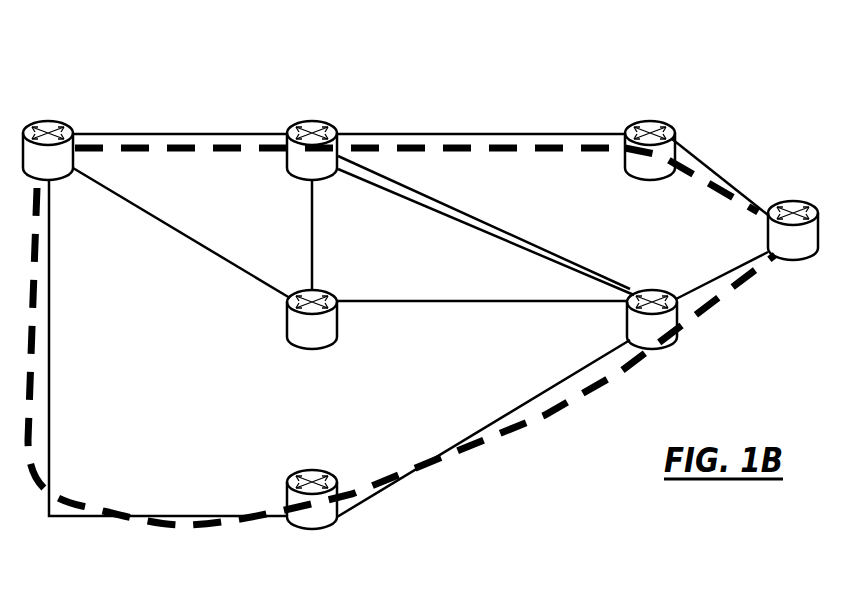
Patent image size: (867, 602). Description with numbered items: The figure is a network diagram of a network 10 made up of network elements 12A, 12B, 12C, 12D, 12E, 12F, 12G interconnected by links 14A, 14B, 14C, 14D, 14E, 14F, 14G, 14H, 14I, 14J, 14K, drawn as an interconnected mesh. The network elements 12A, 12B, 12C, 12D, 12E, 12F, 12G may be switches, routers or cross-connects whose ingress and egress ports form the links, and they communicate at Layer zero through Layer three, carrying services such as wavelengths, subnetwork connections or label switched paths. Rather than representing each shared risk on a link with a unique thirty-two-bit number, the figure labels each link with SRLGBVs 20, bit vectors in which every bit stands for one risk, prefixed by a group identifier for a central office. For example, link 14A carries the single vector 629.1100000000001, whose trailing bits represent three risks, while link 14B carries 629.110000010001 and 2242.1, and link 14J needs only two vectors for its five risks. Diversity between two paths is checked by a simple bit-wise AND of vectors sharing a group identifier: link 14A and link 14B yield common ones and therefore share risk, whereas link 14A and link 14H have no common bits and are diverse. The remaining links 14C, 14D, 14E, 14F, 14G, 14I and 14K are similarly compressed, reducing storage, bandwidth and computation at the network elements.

The network 10 is at (485, 80).
The SRLGBVs 20 is at (228, 97).
The network element 12A is at (57, 123).
The network element 12B is at (316, 123).
The network element 12C is at (660, 122).
The network element 12D is at (287, 340).
The network element 12E is at (655, 352).
The network element 12F is at (790, 263).
The network element 12G is at (287, 527).
The link 14A is at (250, 137).
The link 14B is at (576, 140).
The link 14C is at (698, 143).
The link 14D is at (131, 207).
The link 14E is at (310, 196).
The link 14F is at (392, 302).
The link 14G is at (707, 290).
The link 14H is at (50, 387).
The link 14I is at (467, 440).
The link 14J is at (593, 274).
The link 14K is at (612, 290).